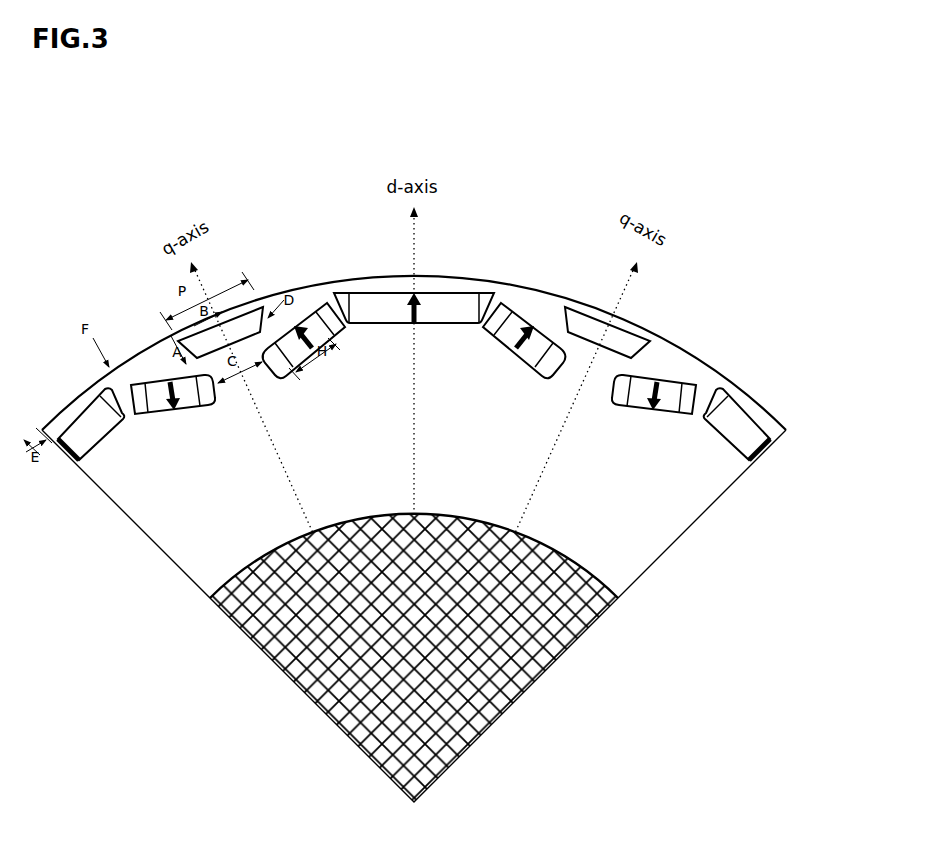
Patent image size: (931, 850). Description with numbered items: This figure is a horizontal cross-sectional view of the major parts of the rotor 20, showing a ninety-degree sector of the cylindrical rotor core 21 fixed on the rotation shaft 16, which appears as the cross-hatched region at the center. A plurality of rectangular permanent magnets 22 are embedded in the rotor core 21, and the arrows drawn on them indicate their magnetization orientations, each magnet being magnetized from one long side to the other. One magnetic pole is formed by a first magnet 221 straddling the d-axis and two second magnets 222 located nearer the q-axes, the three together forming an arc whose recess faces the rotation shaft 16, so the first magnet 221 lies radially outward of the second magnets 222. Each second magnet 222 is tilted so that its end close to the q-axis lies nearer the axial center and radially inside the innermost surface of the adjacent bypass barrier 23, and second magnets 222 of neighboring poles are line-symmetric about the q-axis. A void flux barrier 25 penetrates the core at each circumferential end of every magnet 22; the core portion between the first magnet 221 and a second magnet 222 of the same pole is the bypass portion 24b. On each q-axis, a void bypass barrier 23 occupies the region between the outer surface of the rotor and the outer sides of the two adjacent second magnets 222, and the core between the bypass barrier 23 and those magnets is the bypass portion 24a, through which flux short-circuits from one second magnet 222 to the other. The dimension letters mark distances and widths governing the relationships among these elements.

The rotation shaft 16 is at (533, 690).
The rotor 20 is at (93, 247).
The rotor core 21 is at (713, 453).
The permanent magnet 22 is at (61, 412).
The bypass barrier 23 is at (251, 305).
The bypass portion 24a is at (636, 322).
The bypass portion 24b is at (495, 284).
The flux barrier 25 is at (687, 378).
The first magnet 221 is at (428, 293).
The second magnet 222 is at (156, 376).